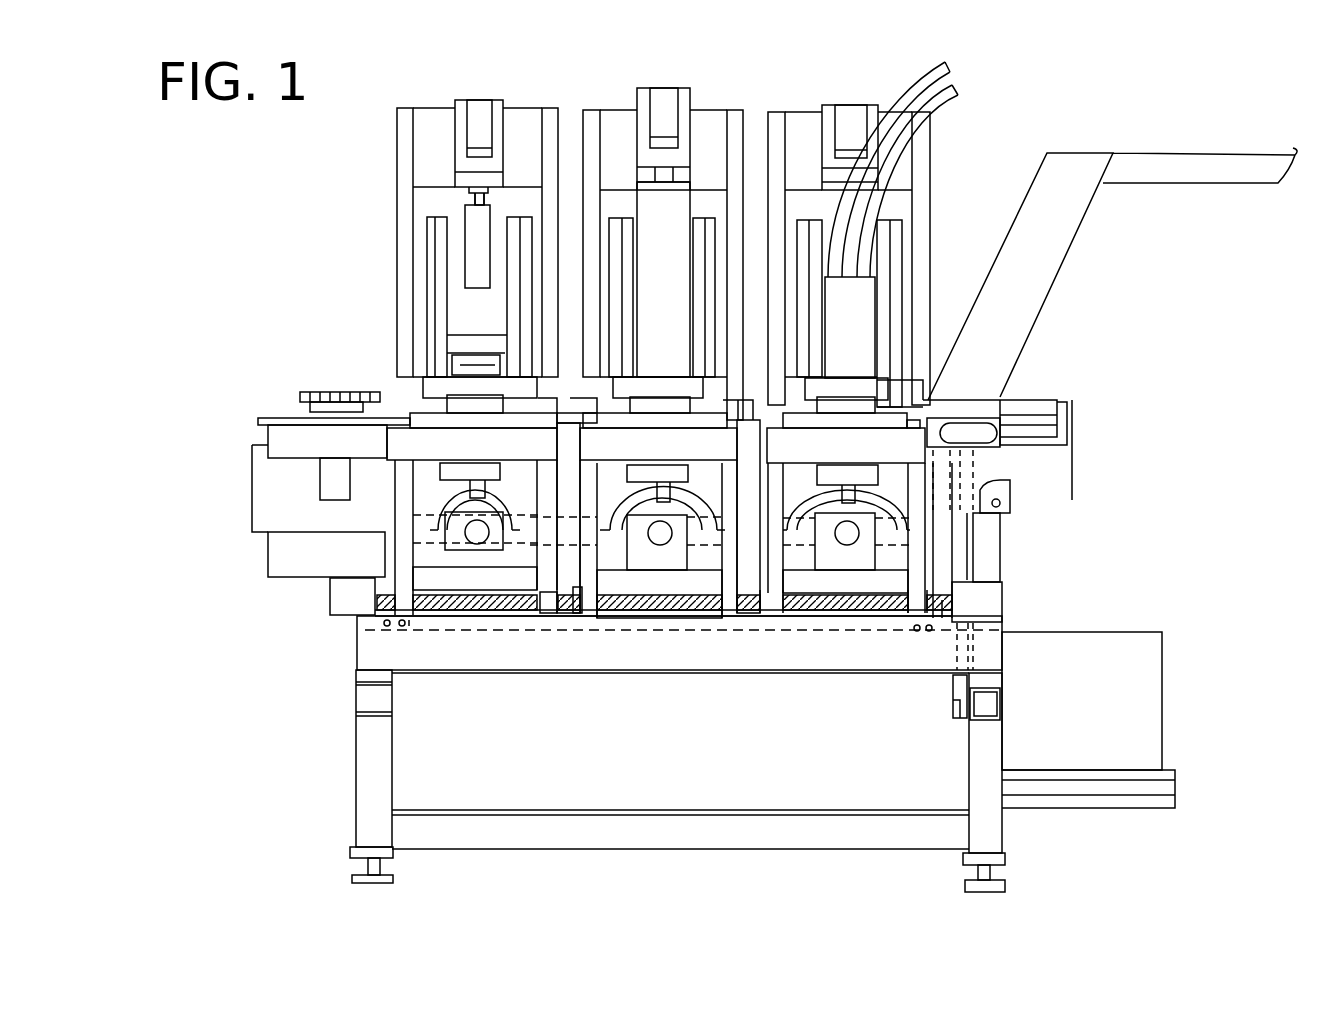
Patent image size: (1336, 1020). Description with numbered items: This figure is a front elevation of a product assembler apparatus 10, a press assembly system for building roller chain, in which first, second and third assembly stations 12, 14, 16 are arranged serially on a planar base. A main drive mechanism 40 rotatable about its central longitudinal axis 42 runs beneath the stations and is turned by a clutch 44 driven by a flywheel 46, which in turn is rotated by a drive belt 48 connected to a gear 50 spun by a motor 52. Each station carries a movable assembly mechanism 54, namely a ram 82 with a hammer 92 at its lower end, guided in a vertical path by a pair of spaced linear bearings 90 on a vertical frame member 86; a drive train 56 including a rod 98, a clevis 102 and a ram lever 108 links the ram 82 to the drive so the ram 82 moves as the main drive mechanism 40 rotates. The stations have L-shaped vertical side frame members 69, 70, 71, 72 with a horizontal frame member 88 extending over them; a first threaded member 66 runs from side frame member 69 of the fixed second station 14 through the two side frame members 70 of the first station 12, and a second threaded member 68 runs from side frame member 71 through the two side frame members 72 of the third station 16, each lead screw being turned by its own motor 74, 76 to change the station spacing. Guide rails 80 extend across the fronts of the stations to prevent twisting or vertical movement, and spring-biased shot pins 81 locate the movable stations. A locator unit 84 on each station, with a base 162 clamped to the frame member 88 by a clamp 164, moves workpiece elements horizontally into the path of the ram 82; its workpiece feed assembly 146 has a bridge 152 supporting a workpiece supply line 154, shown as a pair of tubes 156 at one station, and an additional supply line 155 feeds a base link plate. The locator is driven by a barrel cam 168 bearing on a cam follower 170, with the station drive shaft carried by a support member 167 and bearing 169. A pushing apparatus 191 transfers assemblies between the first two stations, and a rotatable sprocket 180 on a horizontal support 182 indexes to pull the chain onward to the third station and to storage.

The product assembler apparatus 10 is at (930, 197).
The first assembly station 12 is at (930, 128).
The second assembly station 14 is at (733, 112).
The third assembly station 16 is at (560, 110).
The main drive mechanism 40 is at (565, 527).
The central longitudinal axis 42 is at (215, 525).
The clutch 44 is at (962, 535).
The flywheel 46 is at (985, 577).
The drive belt 48 is at (967, 557).
The gear 50 is at (950, 700).
The motor 52 is at (1095, 632).
The movable assembly mechanism 54 is at (437, 245).
The drive train 56 is at (470, 103).
The first threaded member 66 is at (820, 616).
The second threaded member 68 is at (455, 608).
The vertical side frame member 69 is at (680, 612).
The vertical side frame members 70 is at (775, 612).
The vertical side frame member 71 is at (617, 608).
The vertical side frame members 72 is at (400, 550).
The motor 74 is at (990, 603).
The motor 76 is at (338, 595).
The guide rails 80 is at (372, 642).
The shot pins 81 is at (387, 626).
The ram 82 is at (455, 300).
The locator unit 84 is at (430, 392).
The vertical frame member 86 is at (413, 198).
The horizontal frame member 88 is at (480, 457).
The linear bearings 90 is at (447, 268).
The hammer 92 is at (455, 360).
The rod 98 is at (480, 215).
The clevis 102 is at (500, 110).
The ram lever 108 is at (490, 100).
The workpiece feed assembly 146 is at (858, 297).
The bridge 152 is at (882, 380).
The workpiece supply line 154 is at (678, 266).
The additional supply line 155 is at (1040, 268).
The tubes 156 is at (917, 93).
The base 162 is at (447, 415).
The clamp 164 is at (545, 415).
The support member 167 is at (487, 580).
The barrel cam 168 is at (447, 500).
The bearing 169 is at (660, 537).
The cam follower 170 is at (473, 487).
The rotatable sprocket 180 is at (315, 395).
The horizontal support 182 is at (268, 418).
The pushing apparatus 191 is at (1035, 403).